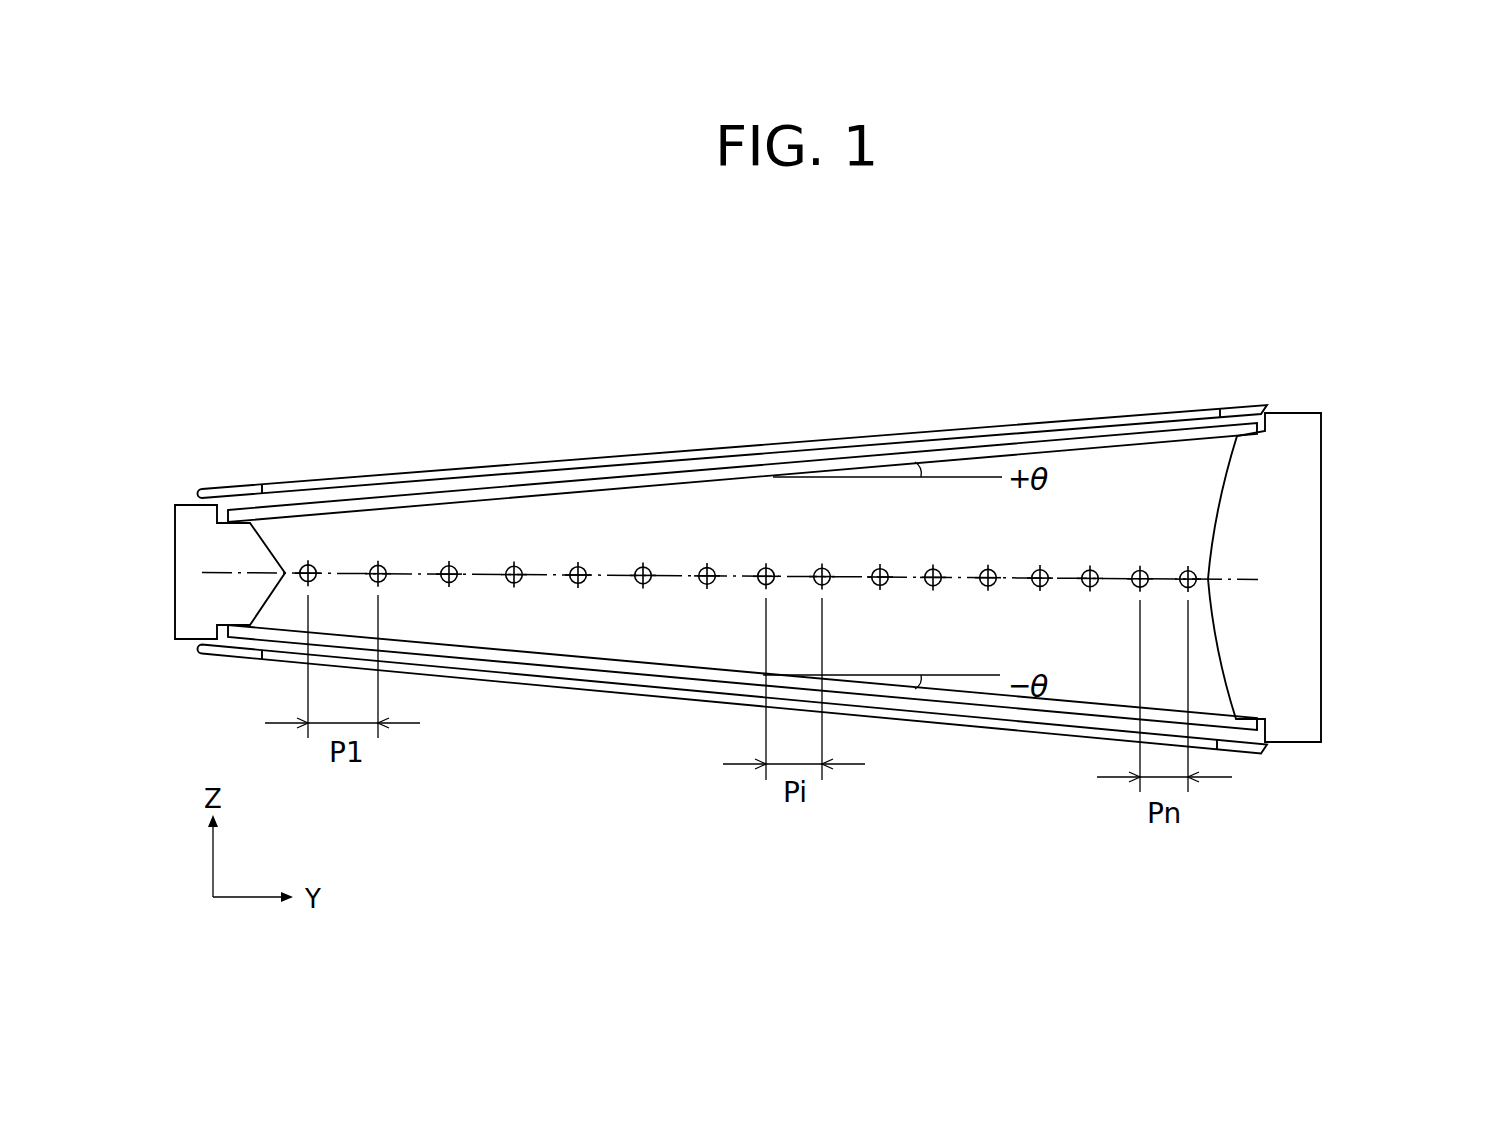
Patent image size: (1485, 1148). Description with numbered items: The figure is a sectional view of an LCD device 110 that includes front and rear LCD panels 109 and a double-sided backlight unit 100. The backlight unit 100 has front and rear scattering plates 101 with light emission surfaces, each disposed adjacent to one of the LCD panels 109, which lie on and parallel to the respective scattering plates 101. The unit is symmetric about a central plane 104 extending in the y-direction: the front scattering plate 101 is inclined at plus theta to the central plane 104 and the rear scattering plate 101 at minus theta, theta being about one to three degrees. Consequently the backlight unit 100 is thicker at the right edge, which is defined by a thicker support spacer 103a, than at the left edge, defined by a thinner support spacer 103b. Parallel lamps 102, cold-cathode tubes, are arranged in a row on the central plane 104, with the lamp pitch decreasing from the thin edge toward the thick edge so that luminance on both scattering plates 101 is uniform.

The backlight unit 100 is at (1333, 436).
The scattering plate 101 is at (823, 458).
The parallel lamp 102 is at (578, 563).
The support spacer 103a is at (1321, 722).
The support spacer 103b is at (190, 504).
The central plane 104 is at (1256, 592).
The LCD panel 109 is at (1242, 404).
The LCD device 110 is at (1356, 240).